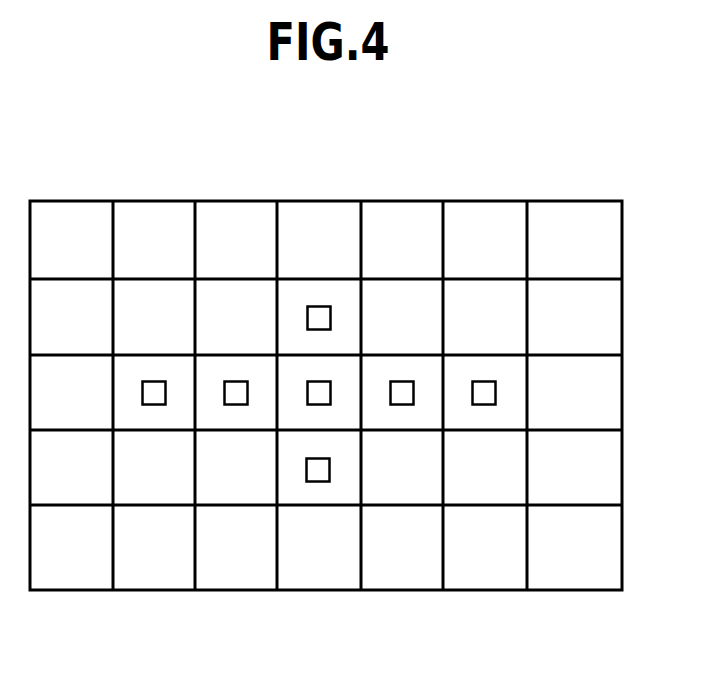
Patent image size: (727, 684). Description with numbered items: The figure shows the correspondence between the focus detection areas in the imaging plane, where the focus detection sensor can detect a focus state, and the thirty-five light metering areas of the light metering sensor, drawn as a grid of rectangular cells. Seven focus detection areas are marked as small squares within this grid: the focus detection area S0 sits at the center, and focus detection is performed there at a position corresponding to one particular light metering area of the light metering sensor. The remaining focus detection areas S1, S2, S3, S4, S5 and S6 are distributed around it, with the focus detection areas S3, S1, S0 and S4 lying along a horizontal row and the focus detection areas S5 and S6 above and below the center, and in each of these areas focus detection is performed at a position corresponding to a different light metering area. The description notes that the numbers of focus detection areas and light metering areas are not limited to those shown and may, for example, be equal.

The focus detection area S0 is at (320, 381).
The focus detection area S1 is at (240, 381).
The focus detection area S2 is at (402, 381).
The focus detection area S3 is at (155, 381).
The focus detection area S4 is at (496, 393).
The focus detection area S5 is at (323, 306).
The focus detection area S6 is at (318, 482).